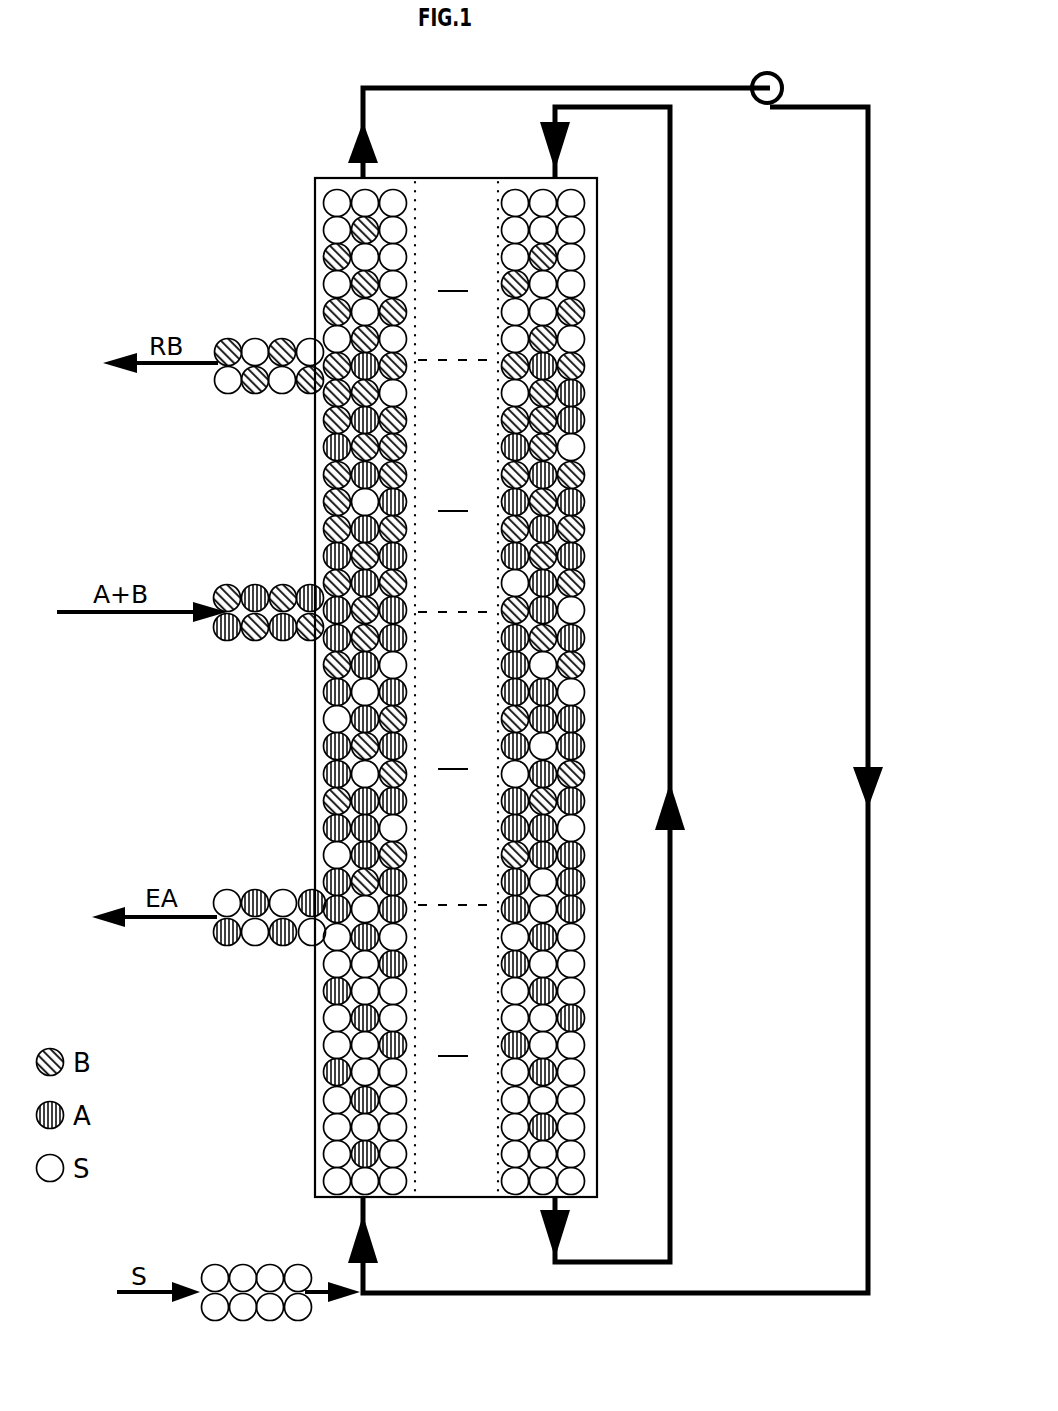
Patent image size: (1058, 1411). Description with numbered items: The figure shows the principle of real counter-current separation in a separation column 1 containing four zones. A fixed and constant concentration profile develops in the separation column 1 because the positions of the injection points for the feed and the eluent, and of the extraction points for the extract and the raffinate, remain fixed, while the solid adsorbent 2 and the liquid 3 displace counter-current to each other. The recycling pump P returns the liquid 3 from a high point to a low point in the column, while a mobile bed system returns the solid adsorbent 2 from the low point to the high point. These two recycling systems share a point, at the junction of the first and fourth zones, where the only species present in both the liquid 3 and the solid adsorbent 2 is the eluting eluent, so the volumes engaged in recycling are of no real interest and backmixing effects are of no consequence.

The separation column 1 is at (272, 211).
The solid adsorbent 2 is at (560, 193).
The liquid 3 is at (437, 88).
The recycling pump P is at (790, 50).